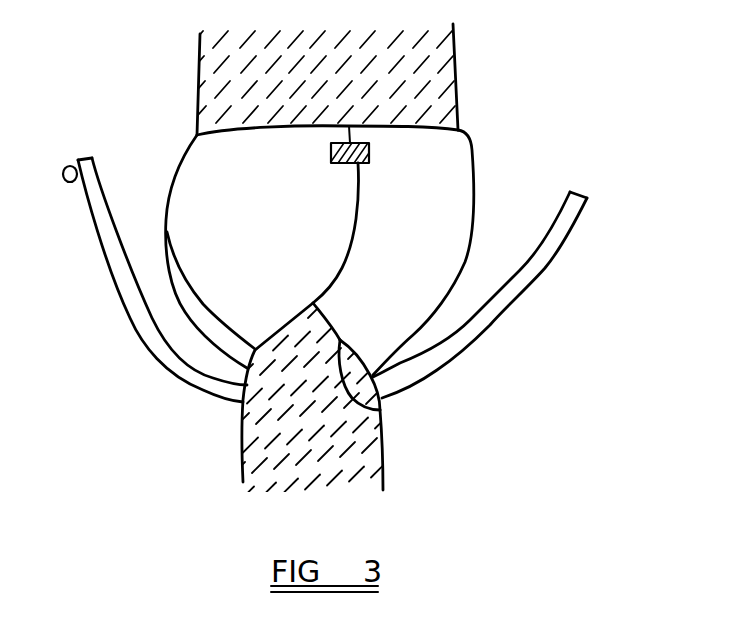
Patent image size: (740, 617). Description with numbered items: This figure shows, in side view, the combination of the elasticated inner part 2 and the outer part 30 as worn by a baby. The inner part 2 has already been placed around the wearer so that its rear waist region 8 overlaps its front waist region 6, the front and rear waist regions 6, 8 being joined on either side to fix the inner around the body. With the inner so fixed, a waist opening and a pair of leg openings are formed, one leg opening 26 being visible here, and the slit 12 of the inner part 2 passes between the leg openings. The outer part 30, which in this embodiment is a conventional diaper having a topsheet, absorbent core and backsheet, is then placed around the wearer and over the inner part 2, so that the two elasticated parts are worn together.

The inner part 2 is at (397, 142).
The front waist region 6 is at (468, 150).
The rear waist region 8 is at (213, 157).
The slit 12 is at (193, 303).
The leg opening 26 is at (375, 410).
The outer part 30 is at (517, 290).